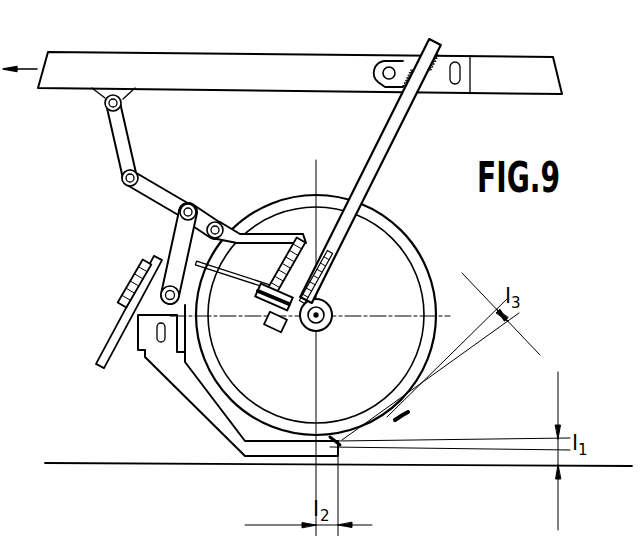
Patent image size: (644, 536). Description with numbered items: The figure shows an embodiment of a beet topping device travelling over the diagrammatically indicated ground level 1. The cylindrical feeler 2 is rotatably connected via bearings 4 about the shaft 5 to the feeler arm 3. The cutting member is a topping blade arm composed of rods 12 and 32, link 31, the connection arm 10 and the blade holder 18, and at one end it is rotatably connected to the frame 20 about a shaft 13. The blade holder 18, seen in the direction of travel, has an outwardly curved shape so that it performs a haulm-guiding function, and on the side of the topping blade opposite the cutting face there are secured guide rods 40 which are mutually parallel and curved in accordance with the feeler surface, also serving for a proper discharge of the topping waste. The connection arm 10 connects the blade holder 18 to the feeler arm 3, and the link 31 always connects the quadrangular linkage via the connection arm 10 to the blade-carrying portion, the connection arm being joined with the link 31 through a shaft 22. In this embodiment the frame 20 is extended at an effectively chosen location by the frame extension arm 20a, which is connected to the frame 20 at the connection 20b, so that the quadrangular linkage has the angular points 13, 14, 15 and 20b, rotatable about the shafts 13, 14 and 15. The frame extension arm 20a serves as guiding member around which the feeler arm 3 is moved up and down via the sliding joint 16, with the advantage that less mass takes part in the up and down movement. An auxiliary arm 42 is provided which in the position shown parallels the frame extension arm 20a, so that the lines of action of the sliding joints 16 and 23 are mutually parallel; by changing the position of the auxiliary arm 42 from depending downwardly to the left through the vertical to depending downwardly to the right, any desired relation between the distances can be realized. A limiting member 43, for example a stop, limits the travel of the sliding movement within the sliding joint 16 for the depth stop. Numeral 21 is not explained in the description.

The ground level 1 is at (97, 462).
The feeler 2 is at (393, 268).
The feeler arm 3 is at (250, 260).
The bearings 4 is at (321, 333).
The shaft 5 is at (330, 318).
The connection arm 10 is at (109, 304).
The rod 12 is at (120, 132).
The shaft 13 is at (122, 103).
The shaft 14 is at (142, 172).
The shaft 15 is at (218, 220).
The sliding joint 16 is at (300, 238).
The blade holder 18 is at (200, 403).
The frame 20 is at (167, 66).
The frame extension arm 20a is at (384, 137).
The connection 20b is at (412, 66).
The pivot pin 21 is at (197, 205).
The shaft 22 is at (160, 285).
The sliding joint 23 is at (117, 303).
The link 31 is at (165, 250).
The rod 32 is at (163, 197).
The guide rods 40 is at (384, 430).
The auxiliary arm 42 is at (100, 355).
The limiting member 43 is at (287, 321).